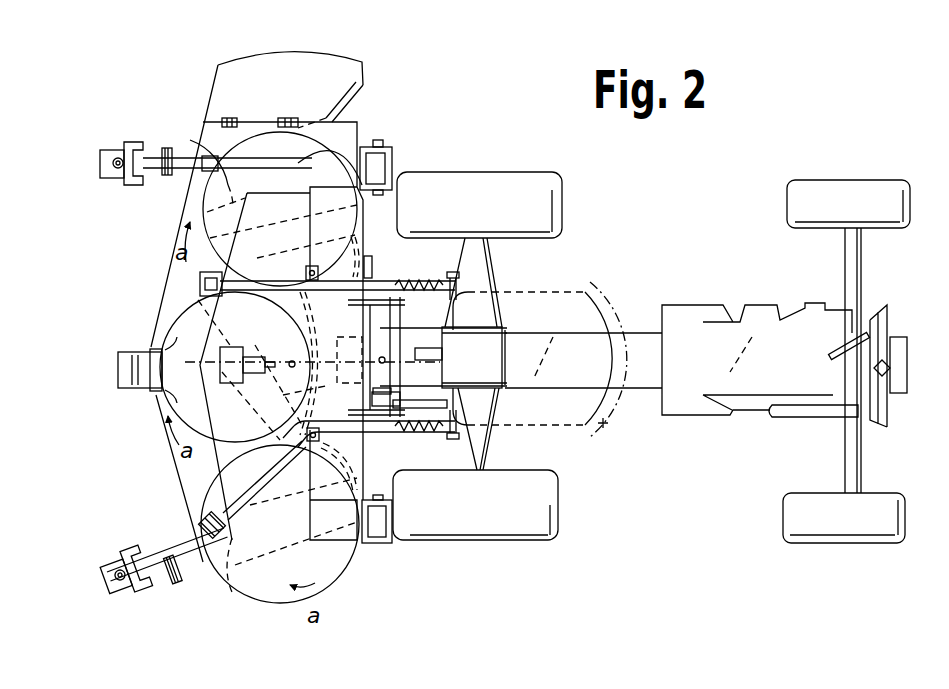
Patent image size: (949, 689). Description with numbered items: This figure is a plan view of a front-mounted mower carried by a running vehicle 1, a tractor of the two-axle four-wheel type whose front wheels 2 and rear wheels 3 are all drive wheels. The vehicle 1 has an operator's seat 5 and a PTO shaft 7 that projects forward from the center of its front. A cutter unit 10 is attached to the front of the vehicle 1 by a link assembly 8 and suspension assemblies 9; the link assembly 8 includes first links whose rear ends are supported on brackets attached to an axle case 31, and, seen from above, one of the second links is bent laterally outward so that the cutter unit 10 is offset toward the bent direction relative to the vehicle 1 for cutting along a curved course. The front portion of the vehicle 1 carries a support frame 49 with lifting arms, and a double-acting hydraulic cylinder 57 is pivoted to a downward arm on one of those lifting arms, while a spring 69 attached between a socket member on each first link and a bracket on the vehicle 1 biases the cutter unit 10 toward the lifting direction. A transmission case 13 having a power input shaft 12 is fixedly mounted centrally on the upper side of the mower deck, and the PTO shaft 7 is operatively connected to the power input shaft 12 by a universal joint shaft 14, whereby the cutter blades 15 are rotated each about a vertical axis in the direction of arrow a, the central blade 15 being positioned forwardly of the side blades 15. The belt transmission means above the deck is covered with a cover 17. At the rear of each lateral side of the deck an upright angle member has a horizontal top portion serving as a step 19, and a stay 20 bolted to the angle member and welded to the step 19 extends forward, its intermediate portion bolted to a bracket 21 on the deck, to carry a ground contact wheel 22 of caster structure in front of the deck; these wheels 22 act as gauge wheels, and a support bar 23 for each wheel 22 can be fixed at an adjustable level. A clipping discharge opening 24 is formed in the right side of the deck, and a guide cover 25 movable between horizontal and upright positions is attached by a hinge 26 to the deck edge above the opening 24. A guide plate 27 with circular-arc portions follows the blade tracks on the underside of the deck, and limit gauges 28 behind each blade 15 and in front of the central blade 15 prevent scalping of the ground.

The running vehicle 1 is at (658, 434).
The front wheels 2 is at (512, 183).
The rear wheels 3 is at (803, 188).
The operator's seat 5 is at (603, 428).
The PTO shaft 7 is at (440, 352).
The link assembly 8 is at (364, 265).
The suspension assemblies 9 is at (304, 272).
The cutter unit 10 is at (153, 284).
The power input shaft 12 is at (272, 360).
The transmission case 13 is at (227, 365).
The universal joint shaft 14 is at (335, 353).
The cutter blades 15 is at (208, 158).
The cover 17 is at (222, 462).
The step 19 is at (332, 532).
The stay 20 is at (355, 126).
The bracket 21 is at (202, 172).
The ground contact wheel 22 is at (163, 147).
The support bar 23 is at (118, 168).
The clipping discharge opening 24 is at (352, 108).
The guide cover 25 is at (342, 78).
The hinge 26 is at (229, 121).
The guide plate 27 is at (389, 264).
The limit gauge 28 is at (386, 162).
The axle case 31 is at (474, 278).
The support frame 49 is at (430, 318).
The double-acting hydraulic cylinder 57 is at (432, 416).
The spring 69 is at (437, 282).